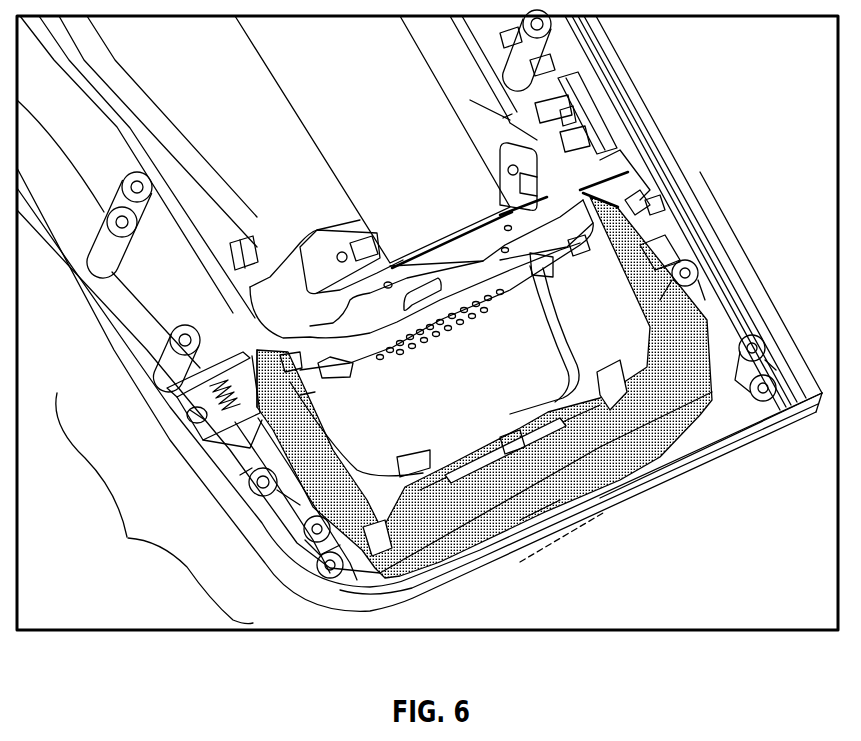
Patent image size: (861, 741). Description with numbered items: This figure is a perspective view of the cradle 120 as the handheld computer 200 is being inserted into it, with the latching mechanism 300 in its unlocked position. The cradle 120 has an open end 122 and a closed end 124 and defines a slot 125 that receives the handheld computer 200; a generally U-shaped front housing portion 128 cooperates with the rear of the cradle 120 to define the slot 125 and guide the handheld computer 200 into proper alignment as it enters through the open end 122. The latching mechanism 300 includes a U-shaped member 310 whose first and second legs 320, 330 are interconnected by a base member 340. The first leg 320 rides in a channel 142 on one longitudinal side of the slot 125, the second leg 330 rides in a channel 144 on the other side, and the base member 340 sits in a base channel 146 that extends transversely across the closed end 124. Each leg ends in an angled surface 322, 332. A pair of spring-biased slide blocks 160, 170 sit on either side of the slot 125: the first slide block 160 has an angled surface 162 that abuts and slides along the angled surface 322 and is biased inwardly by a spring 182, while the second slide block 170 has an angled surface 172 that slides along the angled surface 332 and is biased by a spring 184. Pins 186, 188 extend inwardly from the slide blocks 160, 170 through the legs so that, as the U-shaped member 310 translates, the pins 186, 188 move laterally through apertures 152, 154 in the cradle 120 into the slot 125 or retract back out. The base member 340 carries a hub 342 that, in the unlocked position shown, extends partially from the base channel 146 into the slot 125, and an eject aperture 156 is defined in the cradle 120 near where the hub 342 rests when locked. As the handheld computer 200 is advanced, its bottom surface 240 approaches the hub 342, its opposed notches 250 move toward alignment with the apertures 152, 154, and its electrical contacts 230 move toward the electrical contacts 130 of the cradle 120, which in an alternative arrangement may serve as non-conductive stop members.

The cradle 120 is at (290, 572).
The open end 122 is at (83, 118).
The closed end 124 is at (792, 352).
The slot 125 is at (647, 430).
The front housing portion 128 is at (610, 99).
The electrical contacts 130 is at (600, 379).
The channel 142 is at (340, 452).
The channel 144 is at (703, 318).
The base channel 146 is at (470, 556).
The aperture 152 is at (295, 367).
The aperture 154 is at (576, 258).
The eject aperture 156 is at (600, 525).
The first slide block 160 is at (240, 407).
The angled surface 162 is at (247, 380).
The second slide block 170 is at (647, 190).
The angled surface 172 is at (633, 213).
The spring 182 is at (197, 420).
The spring 184 is at (652, 203).
The pin 186 is at (255, 346).
The pin 188 is at (617, 198).
The handheld computer 200 is at (335, 78).
The electrical contacts 230 is at (348, 370).
The bottom surface 240 is at (437, 337).
The notches 250 is at (503, 127).
The latching mechanism 300 is at (135, 362).
The U-shaped member 310 is at (440, 565).
The first leg 320 is at (307, 488).
The angled surface 322 is at (310, 397).
The second leg 330 is at (667, 290).
The angled surface 332 is at (648, 248).
The base member 340 is at (525, 548).
The hub 342 is at (575, 398).